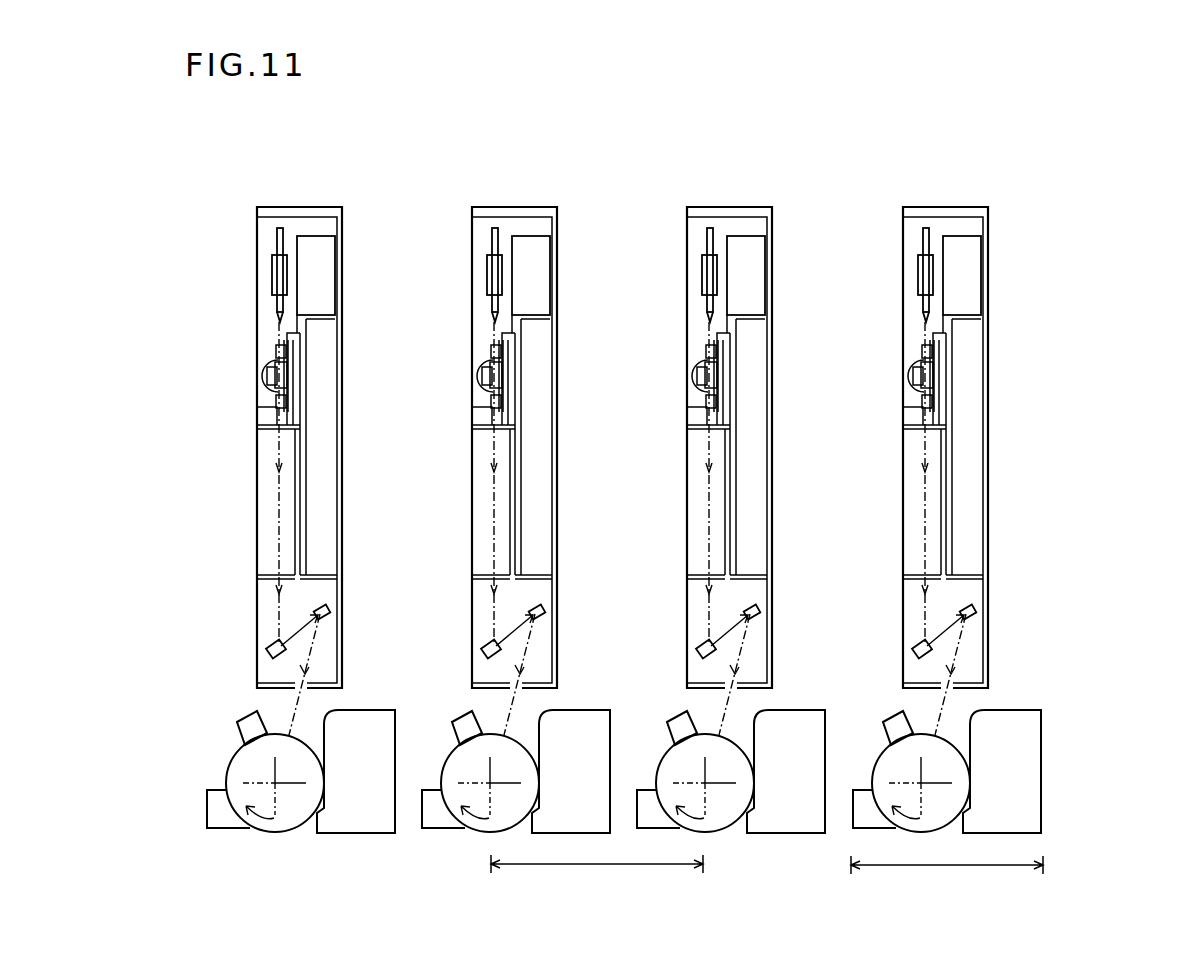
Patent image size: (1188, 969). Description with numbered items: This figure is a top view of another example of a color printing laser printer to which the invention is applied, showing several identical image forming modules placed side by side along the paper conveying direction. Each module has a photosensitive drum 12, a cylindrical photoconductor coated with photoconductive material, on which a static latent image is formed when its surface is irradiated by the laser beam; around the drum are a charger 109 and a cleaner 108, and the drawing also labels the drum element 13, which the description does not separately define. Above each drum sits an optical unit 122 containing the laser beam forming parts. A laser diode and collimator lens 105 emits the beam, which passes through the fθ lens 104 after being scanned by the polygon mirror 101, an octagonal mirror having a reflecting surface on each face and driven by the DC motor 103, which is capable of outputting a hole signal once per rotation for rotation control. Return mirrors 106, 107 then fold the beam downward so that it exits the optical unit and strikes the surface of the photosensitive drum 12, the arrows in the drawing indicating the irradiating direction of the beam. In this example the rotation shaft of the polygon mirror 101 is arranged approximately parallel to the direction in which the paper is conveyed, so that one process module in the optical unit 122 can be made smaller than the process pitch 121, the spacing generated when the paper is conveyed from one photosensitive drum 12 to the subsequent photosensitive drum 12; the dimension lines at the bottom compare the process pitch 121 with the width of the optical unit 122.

The photosensitive drum 12 is at (1007, 747).
The photosensitive drum 13 is at (945, 807).
The polygon mirror 101 is at (930, 300).
The DC motor 103 is at (958, 262).
The fθ lens 104 is at (948, 342).
The laser diode and collimator lens 105 is at (943, 367).
The return mirror 106 is at (987, 677).
The return mirror 107 is at (972, 612).
The cleaner 108 is at (865, 817).
The charger 109 is at (898, 733).
The process pitch 121 is at (587, 864).
The optical unit 122 is at (930, 865).